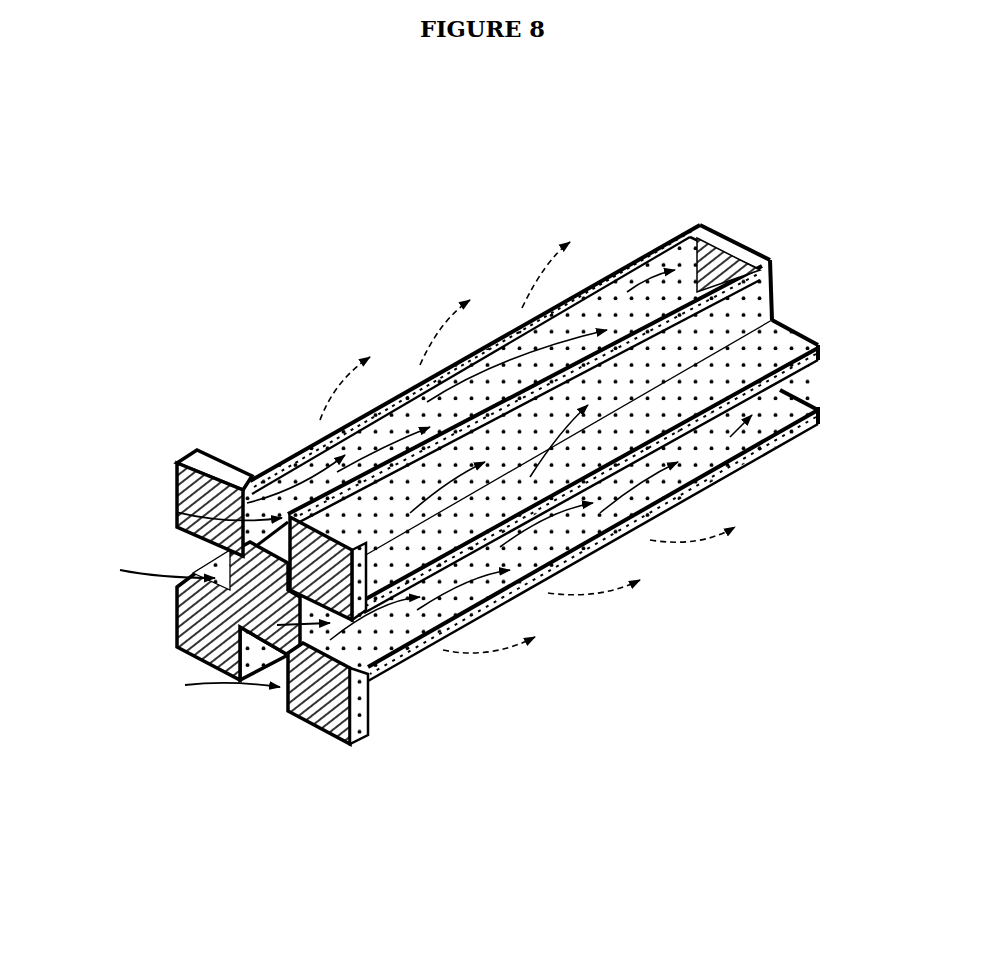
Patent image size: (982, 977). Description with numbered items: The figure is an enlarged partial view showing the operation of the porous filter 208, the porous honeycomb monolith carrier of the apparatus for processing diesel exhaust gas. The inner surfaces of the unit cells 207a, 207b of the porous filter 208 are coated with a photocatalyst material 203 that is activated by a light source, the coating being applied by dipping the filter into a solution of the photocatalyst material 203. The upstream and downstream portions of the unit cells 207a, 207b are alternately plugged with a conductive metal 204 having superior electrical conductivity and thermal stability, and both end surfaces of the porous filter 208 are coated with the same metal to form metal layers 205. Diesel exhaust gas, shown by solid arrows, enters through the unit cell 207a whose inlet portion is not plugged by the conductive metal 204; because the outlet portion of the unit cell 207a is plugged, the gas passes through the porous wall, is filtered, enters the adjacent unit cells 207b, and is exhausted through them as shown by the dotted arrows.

The photocatalyst material 203 is at (588, 280).
The conductive metal 204 is at (700, 222).
The metal layer 205 is at (766, 258).
The unit cell 207a is at (638, 297).
The unit cell 207b is at (730, 330).
The porous filter 208 is at (768, 258).